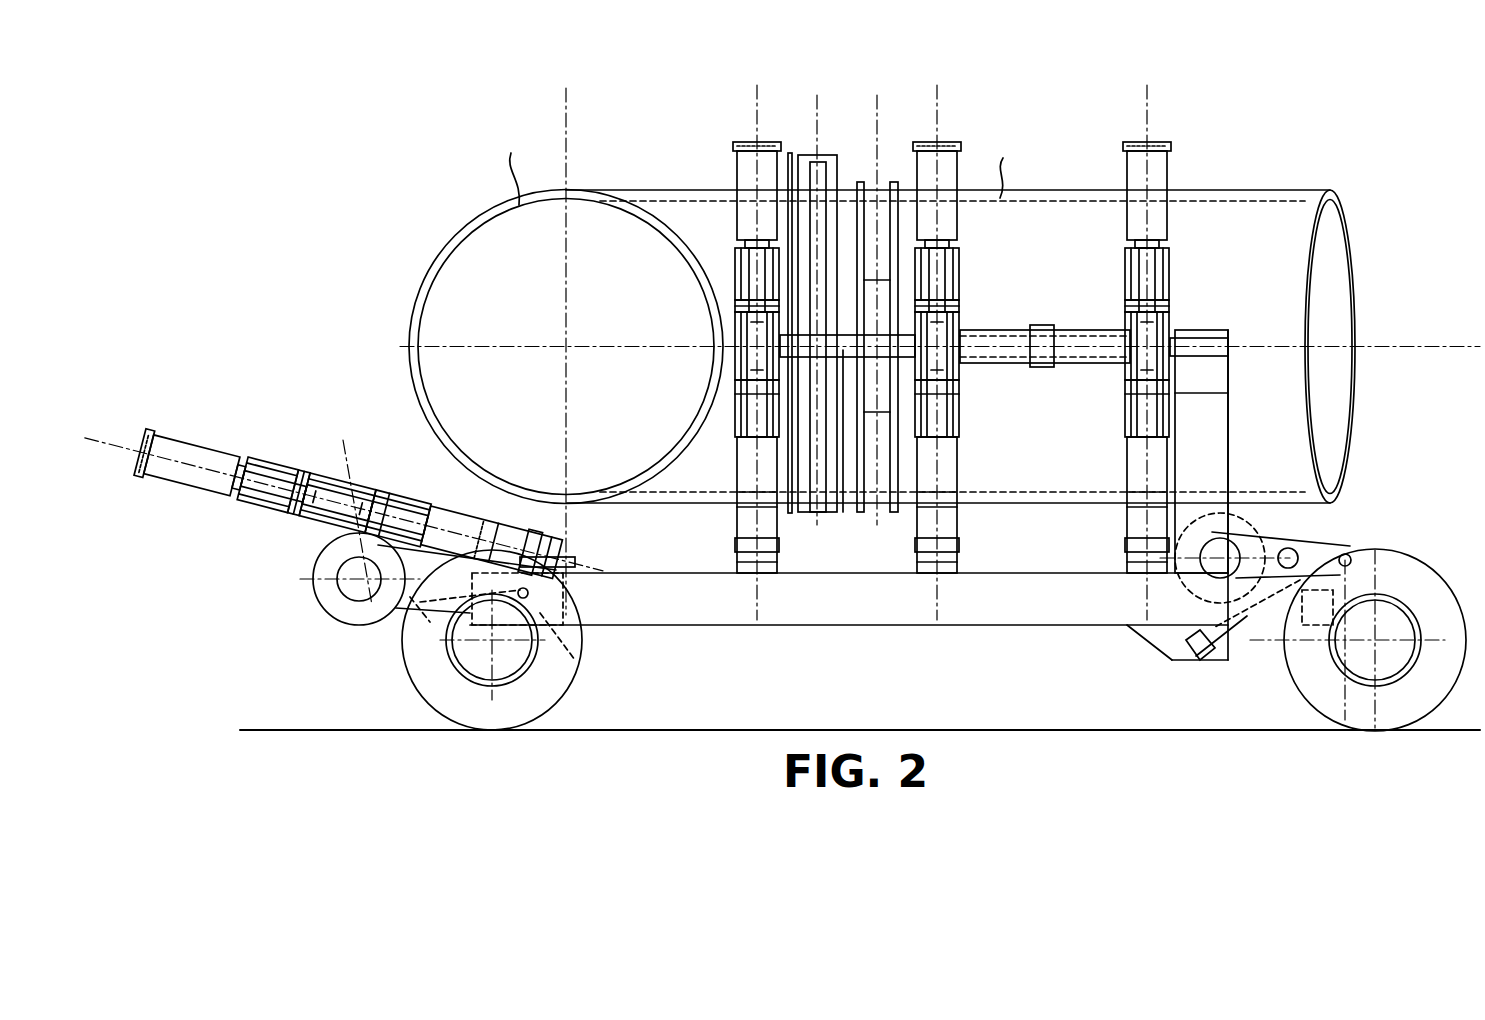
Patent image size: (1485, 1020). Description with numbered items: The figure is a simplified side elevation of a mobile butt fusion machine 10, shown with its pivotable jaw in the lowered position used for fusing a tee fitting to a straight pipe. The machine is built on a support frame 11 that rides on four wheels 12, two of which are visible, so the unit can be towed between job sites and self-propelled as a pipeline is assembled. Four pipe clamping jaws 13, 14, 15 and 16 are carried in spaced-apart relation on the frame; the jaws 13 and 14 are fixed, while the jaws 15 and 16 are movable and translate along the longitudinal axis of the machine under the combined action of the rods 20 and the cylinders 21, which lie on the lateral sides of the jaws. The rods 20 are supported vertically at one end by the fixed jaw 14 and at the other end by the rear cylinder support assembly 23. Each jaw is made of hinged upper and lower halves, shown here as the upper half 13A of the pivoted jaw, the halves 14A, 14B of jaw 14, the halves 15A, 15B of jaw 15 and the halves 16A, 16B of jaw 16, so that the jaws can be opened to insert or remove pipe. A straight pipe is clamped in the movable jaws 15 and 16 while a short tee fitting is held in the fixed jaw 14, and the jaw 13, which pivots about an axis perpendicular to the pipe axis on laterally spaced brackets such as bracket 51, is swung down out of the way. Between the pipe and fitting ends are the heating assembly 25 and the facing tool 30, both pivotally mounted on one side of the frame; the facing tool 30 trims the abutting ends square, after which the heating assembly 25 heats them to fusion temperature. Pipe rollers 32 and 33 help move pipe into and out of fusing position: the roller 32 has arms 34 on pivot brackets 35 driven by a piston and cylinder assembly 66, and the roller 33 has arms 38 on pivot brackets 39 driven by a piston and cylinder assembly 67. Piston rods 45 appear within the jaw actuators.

The butt fusion machine 10 is at (356, 182).
The support frame 11 is at (1126, 621).
The wheels 12 is at (425, 692).
The pipe clamping jaw 13 is at (343, 488).
The upper half of jaw 13A is at (207, 452).
The pipe clamping jaw 14 is at (708, 352).
The upper half of jaw 14A is at (752, 205).
The lower half of jaw 14B is at (742, 556).
The pipe clamping jaw 15 is at (950, 352).
The upper half of jaw 15A is at (922, 170).
The lower half of jaw 15B is at (960, 558).
The pipe clamping jaw 16 is at (1180, 352).
The upper half of jaw 16A is at (1160, 183).
The lower half of jaw 16B is at (1116, 530).
The guide rod 20 is at (843, 350).
The guide rod cylinder 21 is at (1067, 330).
The rear cylinder support assembly 23 is at (1230, 410).
The heating assembly 25 is at (818, 160).
The facing tool 30 is at (877, 192).
The pipe roller 32 is at (322, 590).
The pipe roller 33 is at (1245, 512).
The arms 34 is at (395, 620).
The pivot brackets 35 is at (562, 625).
The arms 38 is at (1305, 536).
The pivot brackets 39 is at (1350, 556).
The piston rod 45 is at (816, 166).
The bracket 51 is at (575, 580).
The piston and cylinder assembly 66 is at (415, 628).
The piston and cylinder assembly 67 is at (1225, 636).